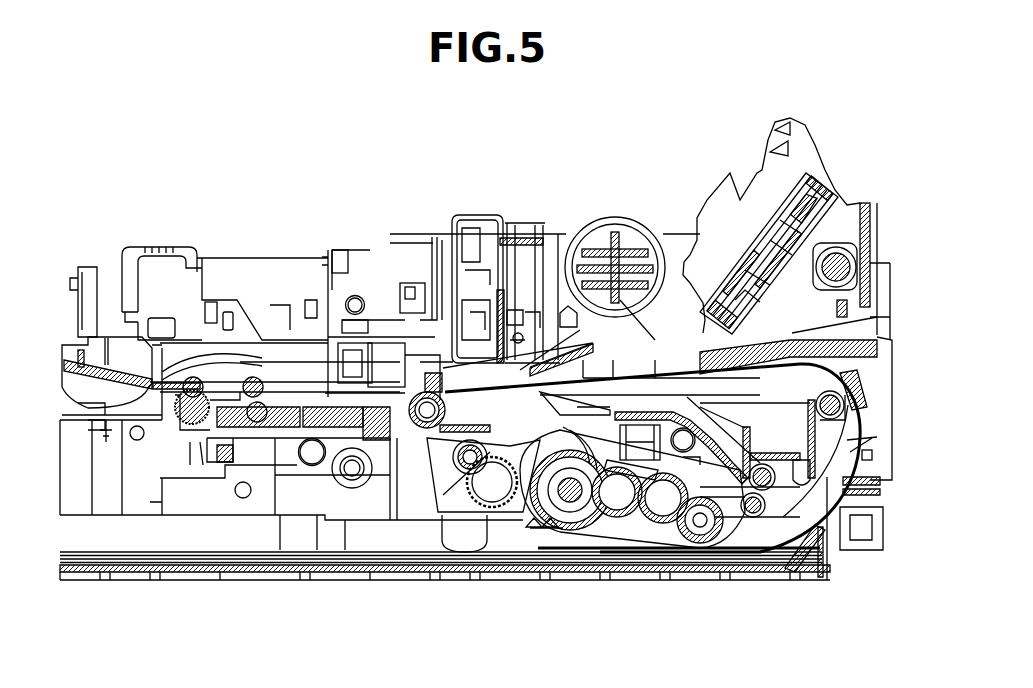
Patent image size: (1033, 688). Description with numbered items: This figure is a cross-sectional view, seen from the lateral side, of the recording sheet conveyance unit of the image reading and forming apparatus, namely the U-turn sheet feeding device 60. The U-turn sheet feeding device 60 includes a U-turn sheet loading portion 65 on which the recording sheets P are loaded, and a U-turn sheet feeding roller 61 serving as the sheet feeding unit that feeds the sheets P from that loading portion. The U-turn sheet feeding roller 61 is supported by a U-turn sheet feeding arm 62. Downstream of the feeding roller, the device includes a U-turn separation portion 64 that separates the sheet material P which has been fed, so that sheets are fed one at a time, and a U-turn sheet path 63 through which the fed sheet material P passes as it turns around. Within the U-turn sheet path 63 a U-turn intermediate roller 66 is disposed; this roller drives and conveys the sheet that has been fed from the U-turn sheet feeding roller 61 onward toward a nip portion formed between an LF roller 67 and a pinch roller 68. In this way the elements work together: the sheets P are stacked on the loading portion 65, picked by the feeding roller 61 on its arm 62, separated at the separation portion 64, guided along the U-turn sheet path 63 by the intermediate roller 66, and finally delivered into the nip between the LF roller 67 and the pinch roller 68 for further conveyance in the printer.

The U-turn sheet feeding device 60 is at (651, 548).
The U-turn sheet feeding roller 61 is at (745, 552).
The U-turn sheet feeding arm 62 is at (659, 562).
The U-turn sheet path 63 is at (868, 466).
The U-turn separation portion 64 is at (805, 553).
The U-turn sheet loading portion 65 is at (452, 573).
The U-turn intermediate roller 66 is at (845, 412).
The LF roller 67 is at (427, 415).
The pinch roller 68 is at (435, 385).
The recording sheet P is at (545, 578).